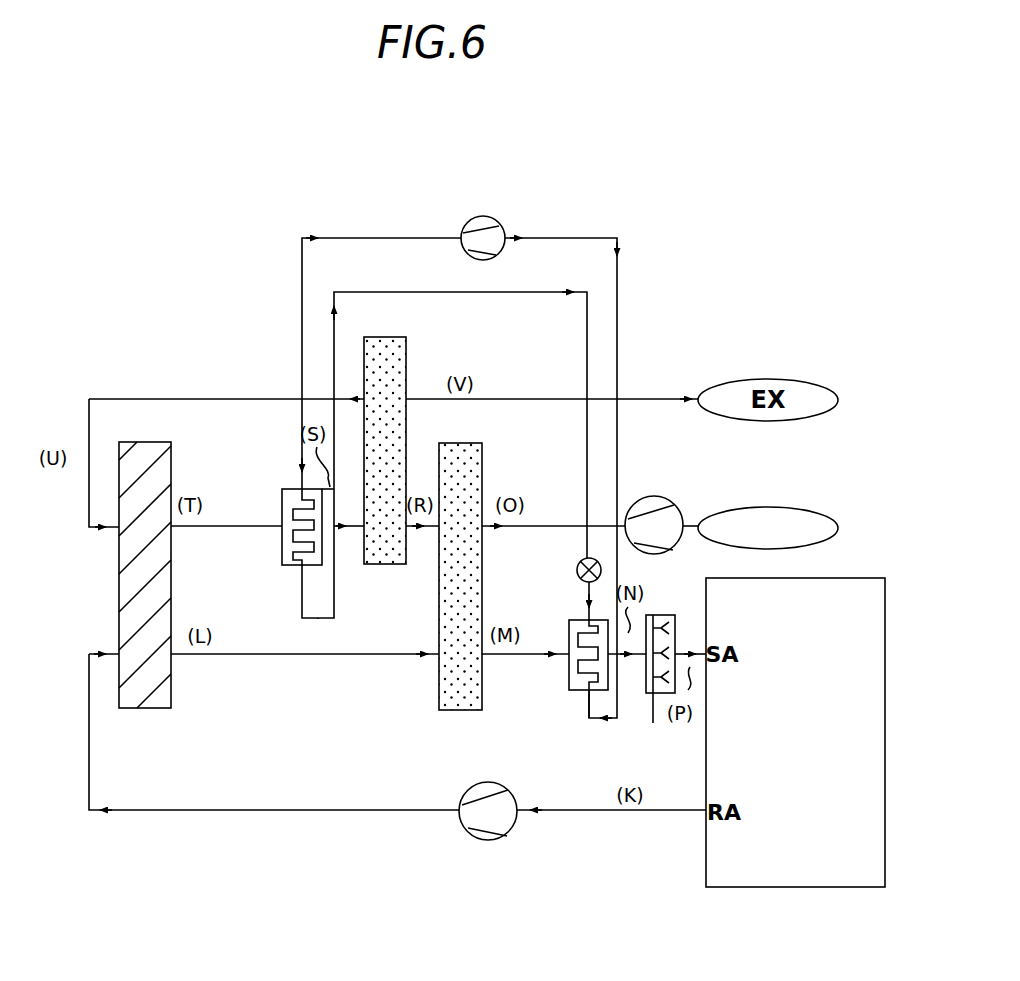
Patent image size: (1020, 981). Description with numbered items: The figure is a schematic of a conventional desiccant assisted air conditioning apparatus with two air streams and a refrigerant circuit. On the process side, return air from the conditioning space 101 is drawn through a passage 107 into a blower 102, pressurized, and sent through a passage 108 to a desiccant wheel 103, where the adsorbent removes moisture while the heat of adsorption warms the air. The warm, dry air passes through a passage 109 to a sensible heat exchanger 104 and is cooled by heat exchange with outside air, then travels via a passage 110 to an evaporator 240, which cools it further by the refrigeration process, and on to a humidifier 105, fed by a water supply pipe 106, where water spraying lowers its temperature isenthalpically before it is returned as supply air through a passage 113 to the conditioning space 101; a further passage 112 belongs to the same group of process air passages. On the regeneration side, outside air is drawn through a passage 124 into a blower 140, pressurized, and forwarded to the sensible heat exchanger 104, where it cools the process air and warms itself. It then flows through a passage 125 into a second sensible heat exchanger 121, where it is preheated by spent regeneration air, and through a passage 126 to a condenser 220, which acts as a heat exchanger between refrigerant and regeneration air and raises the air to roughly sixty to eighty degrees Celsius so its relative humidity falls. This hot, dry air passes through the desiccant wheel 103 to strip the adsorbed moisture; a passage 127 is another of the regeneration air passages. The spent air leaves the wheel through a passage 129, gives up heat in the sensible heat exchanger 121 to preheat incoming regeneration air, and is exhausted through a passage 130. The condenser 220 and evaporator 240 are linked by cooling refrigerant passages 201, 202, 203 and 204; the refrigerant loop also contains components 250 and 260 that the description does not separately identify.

The conditioning space 101 is at (840, 578).
The blower 102 is at (474, 786).
The desiccant wheel 103 is at (119, 621).
The sensible heat exchanger 104 is at (439, 690).
The humidifier 105 is at (668, 615).
The water supply pipe 106 is at (652, 723).
The air passage for process air 107 is at (577, 812).
The air passage for process air 108 is at (242, 812).
The air passage for process air 109 is at (325, 655).
The air passage for process air 110 is at (497, 656).
The air passage for process air 112 is at (594, 719).
The air passage for process air 113 is at (685, 650).
The sensible heat exchanger 121 is at (407, 348).
The air passage for regeneration air 124 is at (688, 525).
The air passage for regeneration air 125 is at (425, 528).
The air passage for regeneration air 126 is at (350, 528).
The air passage for regeneration air 127 is at (227, 527).
The air passage for regeneration air 129 is at (88, 527).
The air passage for regeneration air 130 is at (517, 399).
The blower 140 is at (658, 497).
The cooling refrigerant passage 201 is at (302, 255).
The cooling refrigerant passage 202 is at (318, 618).
The cooling refrigerant passage 203 is at (587, 592).
The cooling refrigerant passage 204 is at (617, 258).
The condenser 220 is at (296, 488).
The evaporator 240 is at (575, 692).
The expansion valve 250 is at (580, 563).
The compressor 260 is at (471, 217).